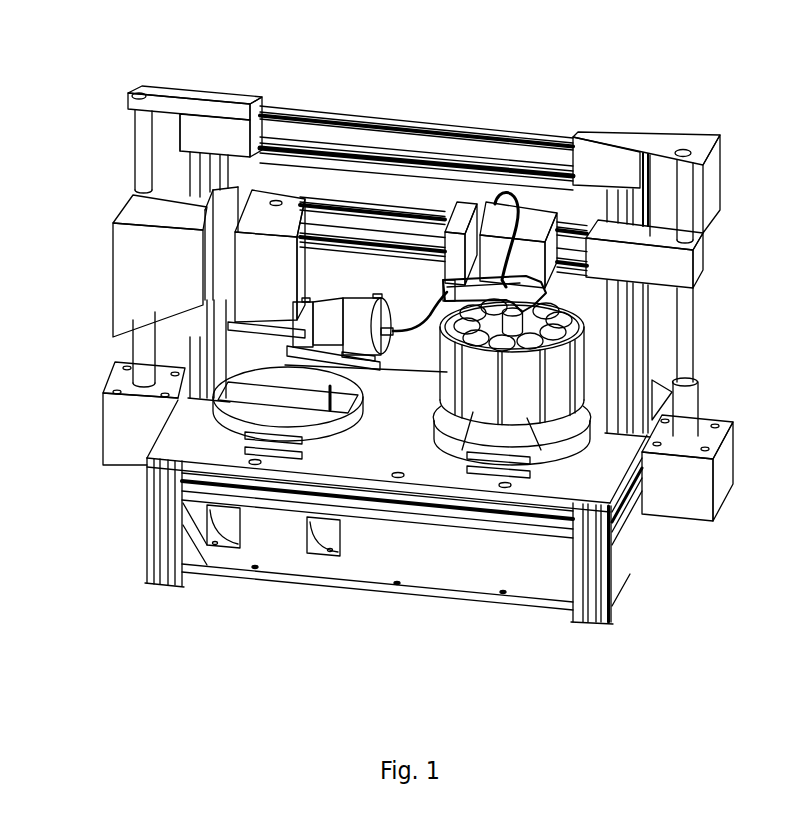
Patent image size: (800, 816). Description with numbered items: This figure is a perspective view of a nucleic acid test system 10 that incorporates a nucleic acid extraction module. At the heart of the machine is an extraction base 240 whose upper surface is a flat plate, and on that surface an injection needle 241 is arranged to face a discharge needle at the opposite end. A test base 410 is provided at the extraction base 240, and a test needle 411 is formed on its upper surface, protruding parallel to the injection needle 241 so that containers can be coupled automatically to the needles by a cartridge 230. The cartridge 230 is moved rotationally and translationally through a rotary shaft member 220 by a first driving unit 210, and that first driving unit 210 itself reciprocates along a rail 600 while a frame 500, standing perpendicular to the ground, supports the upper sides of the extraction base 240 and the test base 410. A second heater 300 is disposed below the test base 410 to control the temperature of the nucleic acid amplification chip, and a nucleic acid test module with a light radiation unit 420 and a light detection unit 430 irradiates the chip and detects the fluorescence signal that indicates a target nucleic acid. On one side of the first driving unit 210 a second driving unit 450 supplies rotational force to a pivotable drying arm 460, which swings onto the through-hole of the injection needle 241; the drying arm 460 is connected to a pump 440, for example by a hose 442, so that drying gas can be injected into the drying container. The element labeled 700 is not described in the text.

The nucleic acid test system 10 is at (249, 28).
The first driving unit 210 is at (535, 212).
The rotary shaft member 220 is at (517, 323).
The cartridge 230 is at (477, 407).
The extraction base 240 is at (547, 462).
The injection needle 241 is at (497, 470).
The second heater 300 is at (257, 535).
The test base 410 is at (147, 543).
The test needle 411 is at (302, 478).
The light radiation unit 420 is at (130, 250).
The light detection unit 430 is at (248, 277).
The pump 440 is at (352, 317).
The hose 442 is at (505, 258).
The second driving unit 450 is at (462, 205).
The drying arm 460 is at (522, 330).
The frame 500 is at (648, 372).
The rail 600 is at (577, 243).
The pedestal 700 is at (200, 460).